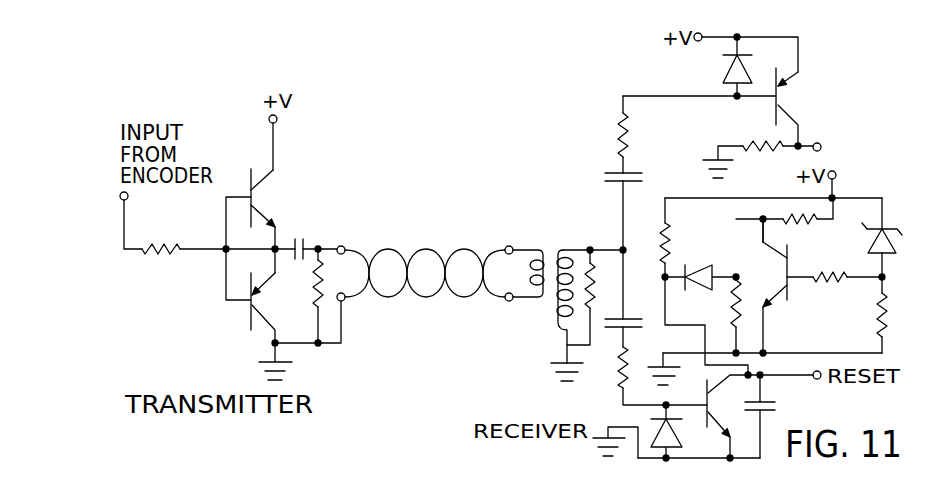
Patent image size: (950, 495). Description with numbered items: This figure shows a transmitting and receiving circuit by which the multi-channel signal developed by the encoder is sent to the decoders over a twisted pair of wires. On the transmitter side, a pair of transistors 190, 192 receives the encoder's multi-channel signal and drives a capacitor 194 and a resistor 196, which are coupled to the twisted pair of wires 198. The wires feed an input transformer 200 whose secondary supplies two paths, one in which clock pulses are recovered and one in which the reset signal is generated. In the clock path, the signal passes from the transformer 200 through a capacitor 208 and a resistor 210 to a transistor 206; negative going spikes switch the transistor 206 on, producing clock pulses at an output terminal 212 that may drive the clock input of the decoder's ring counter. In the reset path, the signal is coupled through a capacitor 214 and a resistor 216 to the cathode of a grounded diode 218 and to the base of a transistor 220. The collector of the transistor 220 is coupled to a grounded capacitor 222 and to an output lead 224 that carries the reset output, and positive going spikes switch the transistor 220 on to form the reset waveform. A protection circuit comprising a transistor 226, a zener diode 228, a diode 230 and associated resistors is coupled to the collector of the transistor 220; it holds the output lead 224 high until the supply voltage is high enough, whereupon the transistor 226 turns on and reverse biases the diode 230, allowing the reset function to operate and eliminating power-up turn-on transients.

The transistor 190 is at (254, 198).
The transistor 192 is at (248, 315).
The capacitor 194 is at (305, 247).
The resistor 196 is at (344, 301).
The twisted pair of wires 198 is at (458, 248).
The input transformer 200 is at (582, 246).
The transistor 206 is at (787, 94).
The capacitor 208 is at (620, 168).
The resistor 210 is at (620, 130).
The output terminal 212 is at (805, 140).
The capacitor 214 is at (633, 330).
The resistor 216 is at (620, 372).
The grounded diode 218 is at (653, 430).
The transistor 220 is at (712, 405).
The grounded capacitor 222 is at (768, 414).
The output lead 224 is at (806, 373).
The transistor 226 is at (790, 288).
The zener diode 228 is at (870, 236).
The diode 230 is at (697, 263).